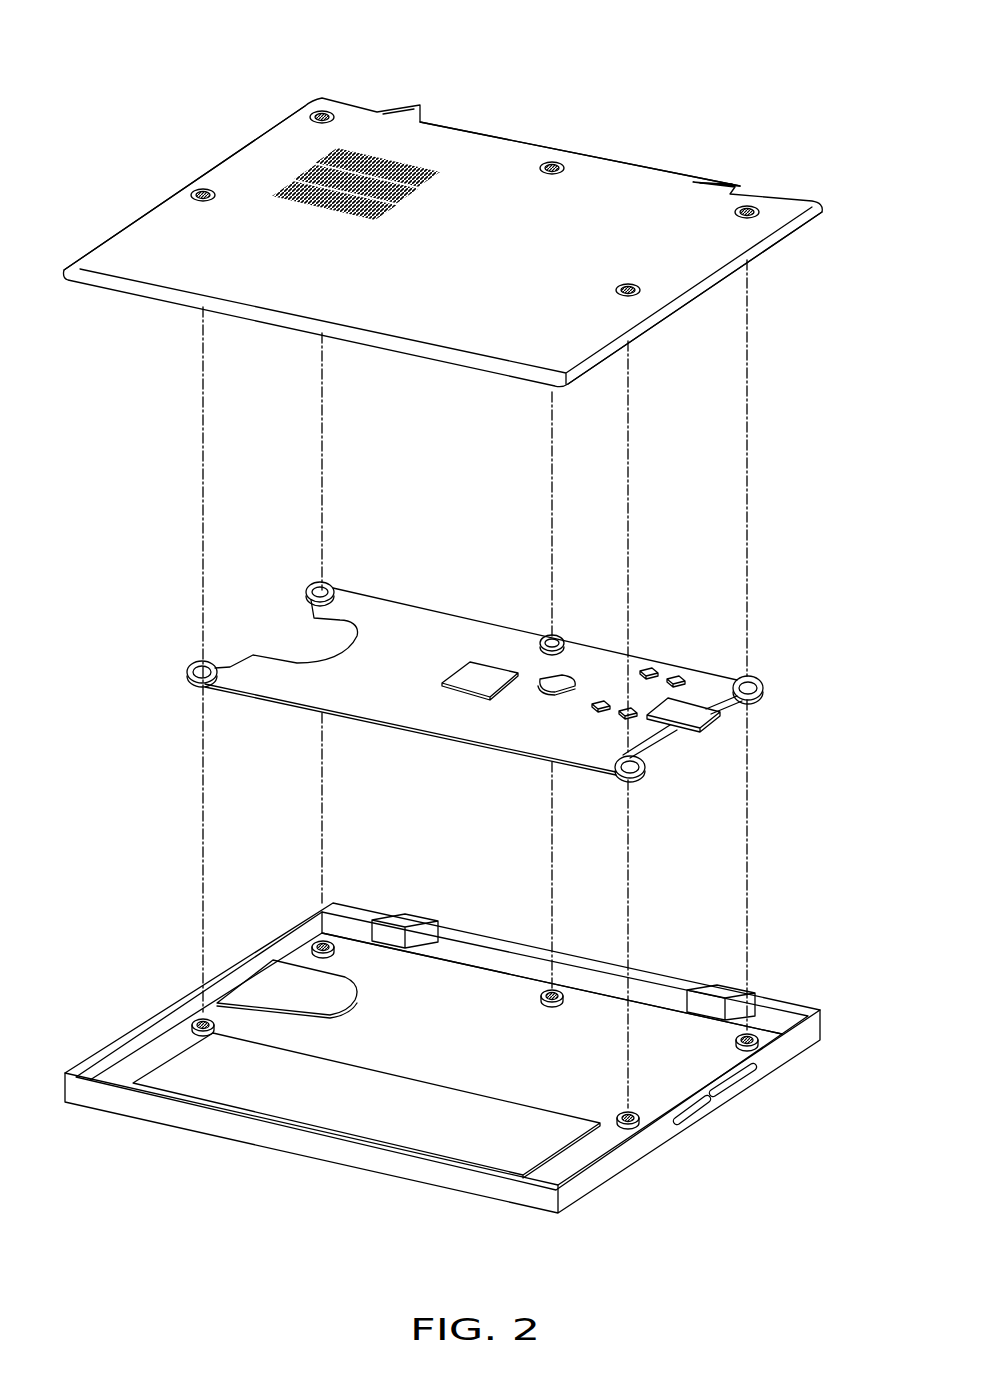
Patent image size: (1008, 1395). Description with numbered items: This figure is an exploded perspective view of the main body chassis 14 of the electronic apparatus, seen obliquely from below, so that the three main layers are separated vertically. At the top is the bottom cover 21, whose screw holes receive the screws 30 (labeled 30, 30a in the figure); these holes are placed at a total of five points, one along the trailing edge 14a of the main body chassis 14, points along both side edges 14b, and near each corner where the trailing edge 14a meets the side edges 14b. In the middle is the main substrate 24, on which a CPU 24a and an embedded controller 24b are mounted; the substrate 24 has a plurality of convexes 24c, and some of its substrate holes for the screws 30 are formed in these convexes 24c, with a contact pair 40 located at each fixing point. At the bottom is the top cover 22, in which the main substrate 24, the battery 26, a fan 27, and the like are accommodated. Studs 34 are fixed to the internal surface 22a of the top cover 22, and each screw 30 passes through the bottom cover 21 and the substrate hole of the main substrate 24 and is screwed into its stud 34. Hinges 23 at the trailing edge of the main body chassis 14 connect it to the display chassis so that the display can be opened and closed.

The main body chassis 14 is at (745, 66).
The trailing edge 14a is at (490, 123).
The side edges 14b is at (142, 208).
The bottom cover 21 is at (653, 272).
The top cover 22 is at (605, 1170).
The internal surface 22a is at (470, 1063).
The hinges 23 is at (390, 925).
The main substrate 24 is at (427, 627).
The CPU 24a is at (480, 677).
The embedded controller 24b is at (548, 689).
The convexes 24c is at (213, 663).
The battery 26 is at (374, 1122).
The fan 27 is at (257, 983).
The screw 30 is at (478, 227).
The fastening hole 30a is at (310, 114).
The stud 34 is at (322, 111).
The contact pair 40 is at (474, 678).